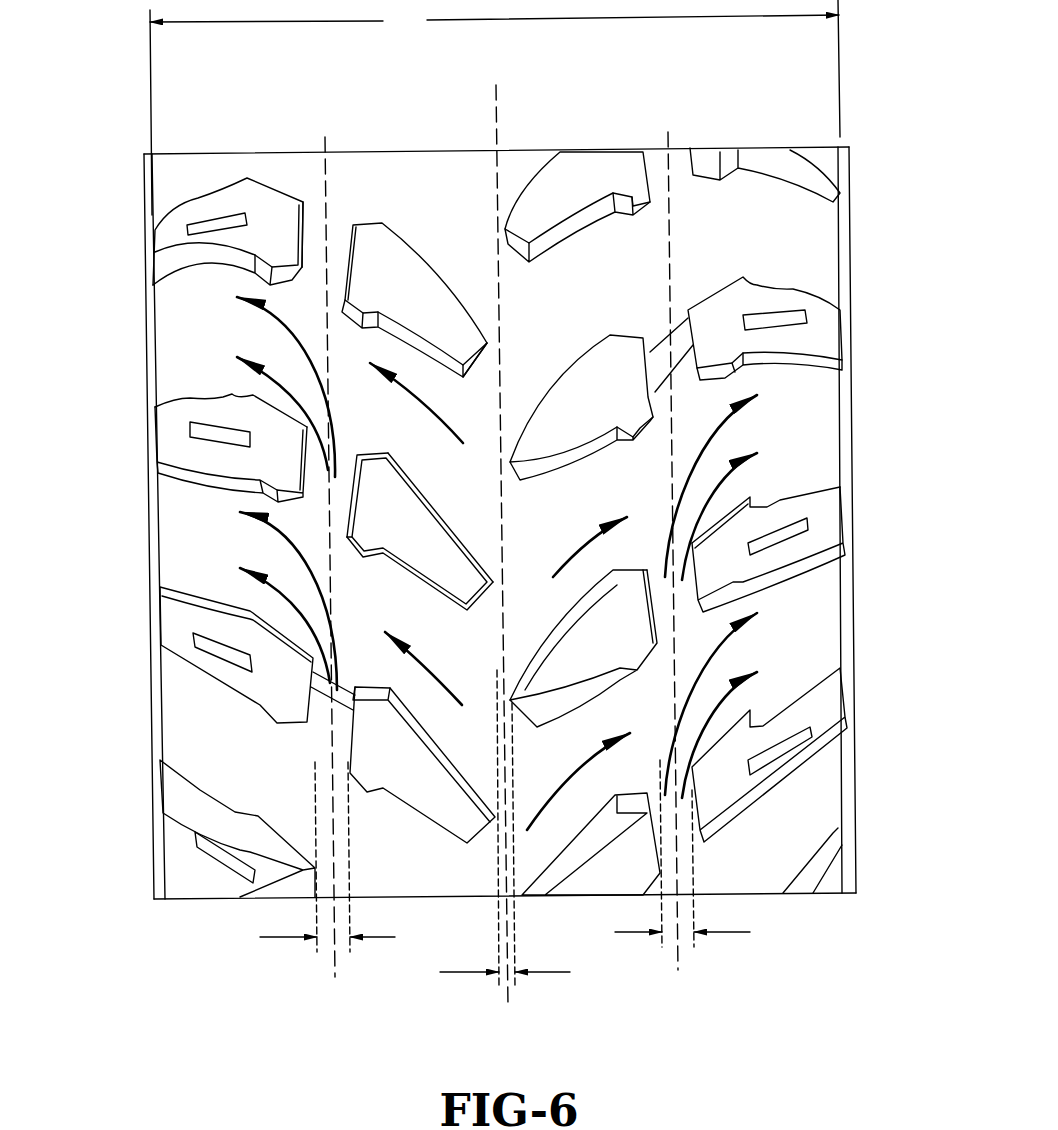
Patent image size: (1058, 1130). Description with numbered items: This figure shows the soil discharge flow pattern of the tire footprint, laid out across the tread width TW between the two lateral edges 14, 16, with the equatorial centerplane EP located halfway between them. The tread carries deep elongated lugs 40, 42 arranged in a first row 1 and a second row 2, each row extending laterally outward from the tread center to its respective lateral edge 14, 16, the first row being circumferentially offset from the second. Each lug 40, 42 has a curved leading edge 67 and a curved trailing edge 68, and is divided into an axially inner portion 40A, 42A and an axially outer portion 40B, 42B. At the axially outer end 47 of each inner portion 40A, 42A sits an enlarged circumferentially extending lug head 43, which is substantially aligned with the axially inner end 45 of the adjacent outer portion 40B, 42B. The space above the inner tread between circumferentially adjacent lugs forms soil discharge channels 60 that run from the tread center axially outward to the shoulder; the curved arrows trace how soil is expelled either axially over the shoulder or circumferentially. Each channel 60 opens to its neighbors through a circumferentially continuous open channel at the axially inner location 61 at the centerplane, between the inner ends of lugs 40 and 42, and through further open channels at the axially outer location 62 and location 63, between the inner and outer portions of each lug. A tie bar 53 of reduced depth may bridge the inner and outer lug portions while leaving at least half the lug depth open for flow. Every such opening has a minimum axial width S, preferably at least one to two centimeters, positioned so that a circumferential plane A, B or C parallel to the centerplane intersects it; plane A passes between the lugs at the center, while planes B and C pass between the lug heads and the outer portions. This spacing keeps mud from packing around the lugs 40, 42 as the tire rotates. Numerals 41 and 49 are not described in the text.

The first row 1 is at (414, 221).
The second row 2 is at (566, 213).
The lateral edge 14 is at (150, 80).
The lateral edge 16 is at (839, 70).
The elongated lug 40 is at (181, 240).
The axially inner portion 40A is at (367, 287).
The axially outer portion 40B is at (290, 226).
The leading edge of lug 41 is at (483, 352).
The elongated lug 42 is at (808, 307).
The axially inner portion 42A is at (622, 357).
The axially outer portion 42B is at (823, 330).
The enlarged lug head 43 is at (407, 524).
The axially inner end 45 is at (312, 473).
The axially outer end 47 is at (416, 508).
The sipe 49 is at (172, 242).
The tie bar 53 is at (657, 357).
The soil discharge channel 60 is at (801, 158).
The axially inner location 61 is at (490, 268).
The axially outer location 62 is at (313, 212).
The channel location 63 is at (681, 158).
The leading edge 67 is at (207, 467).
The trailing edge 68 is at (195, 398).
The tread width TW is at (495, 107).
The equatorial centerplane EP is at (493, 531).
The parallel plane A is at (506, 852).
The parallel plane B is at (334, 572).
The parallel plane C is at (677, 567).
The minimum opening width S is at (505, 872).